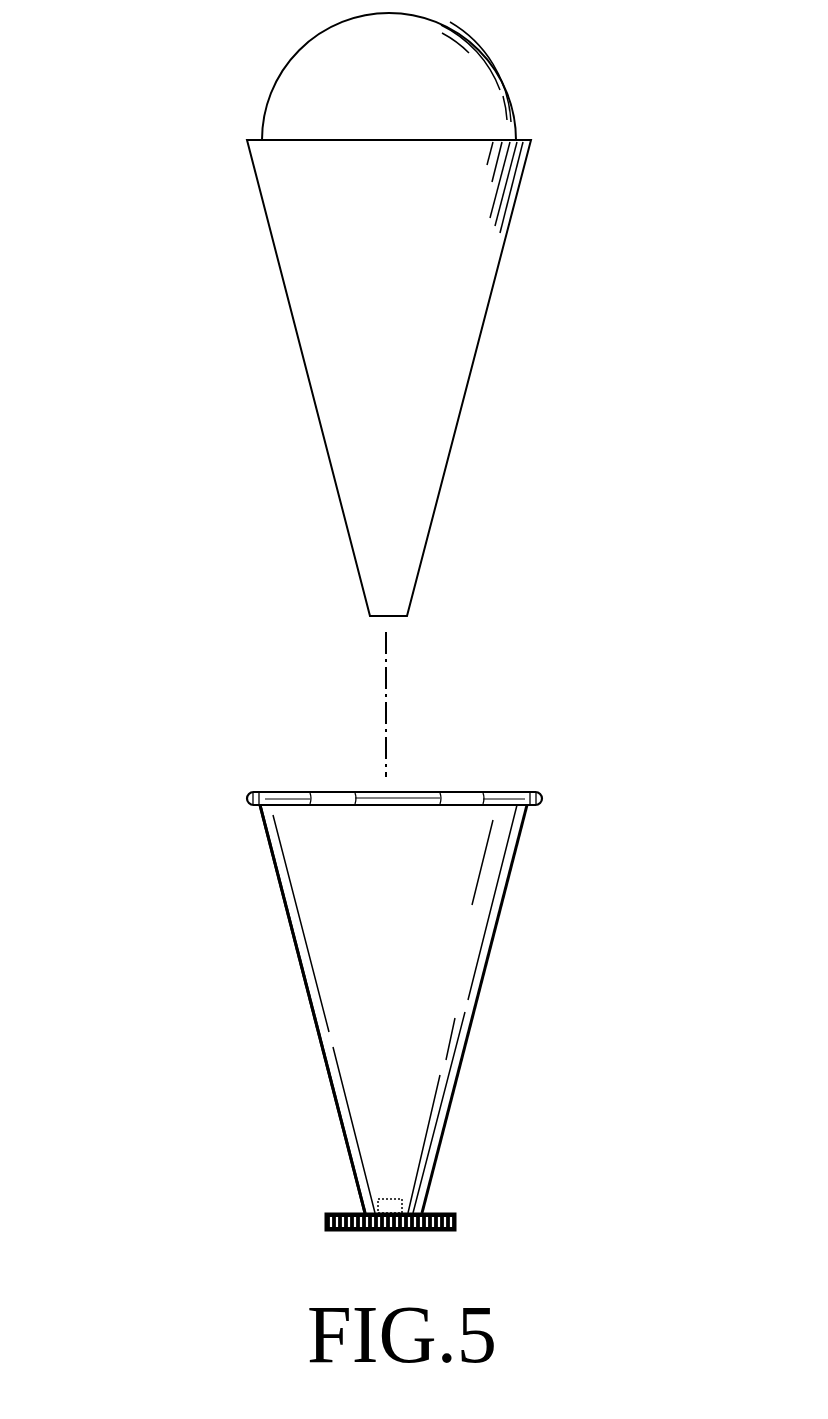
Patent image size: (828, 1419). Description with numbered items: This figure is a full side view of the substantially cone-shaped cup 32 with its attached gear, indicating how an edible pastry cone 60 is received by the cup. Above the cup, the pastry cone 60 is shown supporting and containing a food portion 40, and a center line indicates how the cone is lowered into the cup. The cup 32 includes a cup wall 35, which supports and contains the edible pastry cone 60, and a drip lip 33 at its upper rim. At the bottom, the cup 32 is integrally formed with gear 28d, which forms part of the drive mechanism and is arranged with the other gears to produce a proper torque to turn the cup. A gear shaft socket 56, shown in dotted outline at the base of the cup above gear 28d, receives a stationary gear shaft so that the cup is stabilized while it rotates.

The food portion 40 is at (290, 93).
The edible pastry cone 60 is at (317, 287).
The drip lip 33 is at (512, 792).
The cup wall 35 is at (267, 837).
The substantially cone-shaped cup 32 is at (417, 990).
The gear 28d is at (327, 1220).
The gear shaft socket 56 is at (393, 1207).